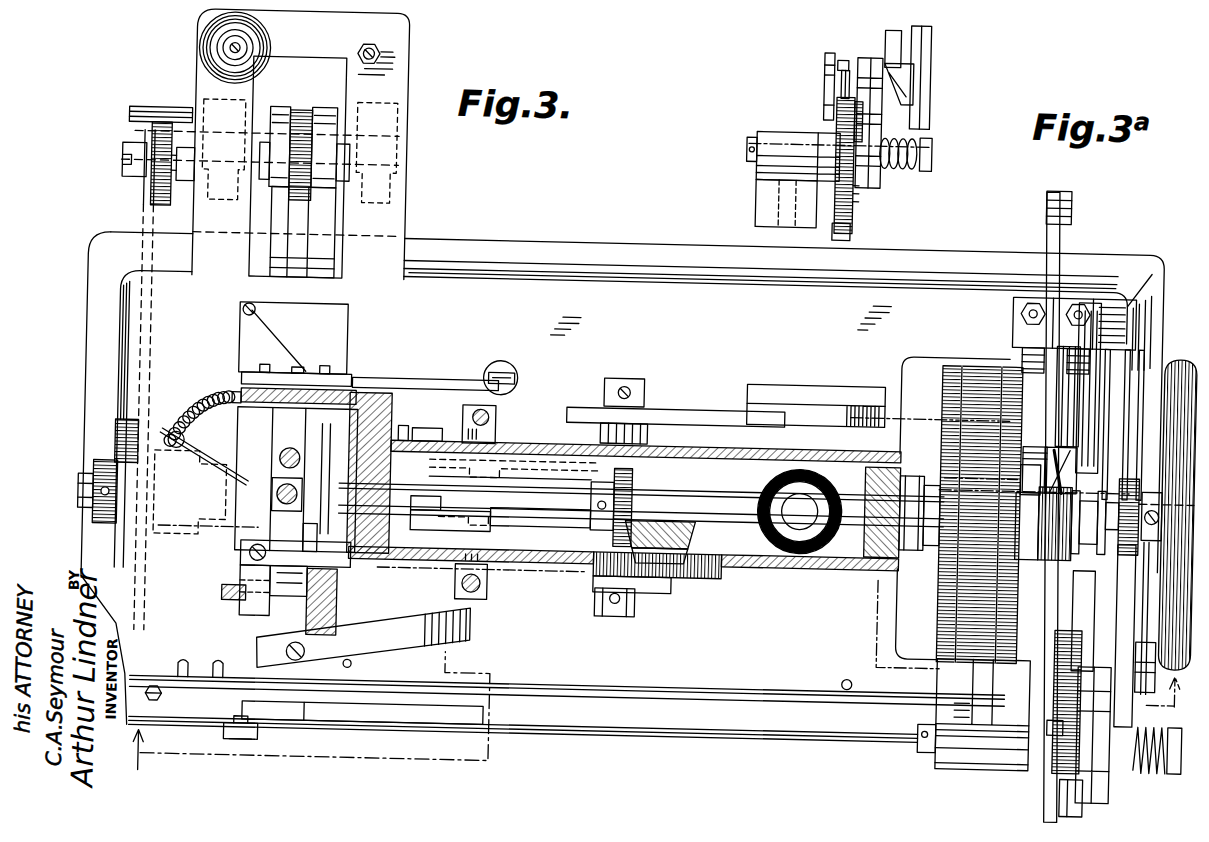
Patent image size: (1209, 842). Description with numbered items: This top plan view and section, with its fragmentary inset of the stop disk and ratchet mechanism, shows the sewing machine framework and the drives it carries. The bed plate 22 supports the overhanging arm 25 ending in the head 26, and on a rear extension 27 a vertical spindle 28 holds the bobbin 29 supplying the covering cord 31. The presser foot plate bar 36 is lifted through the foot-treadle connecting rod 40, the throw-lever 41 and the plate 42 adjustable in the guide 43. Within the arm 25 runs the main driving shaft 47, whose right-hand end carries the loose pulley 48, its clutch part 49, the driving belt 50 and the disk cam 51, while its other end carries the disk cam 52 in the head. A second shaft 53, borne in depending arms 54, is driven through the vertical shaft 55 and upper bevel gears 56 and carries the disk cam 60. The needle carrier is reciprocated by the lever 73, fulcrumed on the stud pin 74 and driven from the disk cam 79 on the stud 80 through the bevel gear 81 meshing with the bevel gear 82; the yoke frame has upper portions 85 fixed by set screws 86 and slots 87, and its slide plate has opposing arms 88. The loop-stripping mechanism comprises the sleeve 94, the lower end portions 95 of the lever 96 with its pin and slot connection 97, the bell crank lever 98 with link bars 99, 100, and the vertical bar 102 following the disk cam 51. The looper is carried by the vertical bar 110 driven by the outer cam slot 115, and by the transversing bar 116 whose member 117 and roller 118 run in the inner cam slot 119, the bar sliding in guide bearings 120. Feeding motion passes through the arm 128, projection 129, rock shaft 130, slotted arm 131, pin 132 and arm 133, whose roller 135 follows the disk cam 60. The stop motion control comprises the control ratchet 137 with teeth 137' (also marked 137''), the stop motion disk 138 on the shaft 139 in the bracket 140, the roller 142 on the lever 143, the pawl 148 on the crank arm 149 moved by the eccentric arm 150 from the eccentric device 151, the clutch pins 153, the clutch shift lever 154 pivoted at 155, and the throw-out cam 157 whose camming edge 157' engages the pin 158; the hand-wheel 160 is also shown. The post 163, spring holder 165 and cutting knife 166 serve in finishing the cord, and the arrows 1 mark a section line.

In FIG. 3, the section line 1 is at (647, 718).
In FIG. 3, the bed plate 22 is at (667, 301).
In FIG. 3, the overhanging arm 25 is at (815, 565).
In FIG. 3, the head 26 is at (240, 383).
In FIG. 3, the rear extension 27 is at (264, 143).
In FIG. 3, the vertical spindle 28 is at (220, 54).
In FIG. 3, the bobbin 29 is at (198, 62).
In FIG. 3, the fabric cord 31 is at (228, 478).
In FIG. 3, the presser foot plate bar 36 is at (287, 456).
In FIG. 3, the foot-treadle connecting rod 40 is at (501, 368).
In FIG. 3, the throw-lever 41 is at (415, 378).
In FIG. 3, the plate 42 is at (278, 378).
In FIG. 3, the guide 43 is at (303, 376).
In FIG. 3, the main driving shaft 47 is at (1170, 550).
In FIG. 3, the loose pulley 48 is at (952, 362).
In FIG. 3, the clutch part 49 is at (1030, 500).
In FIG. 3, the driving belt 50 is at (1009, 475).
In FIG. 3, the disk cam 51 is at (941, 374).
In FIG. 3, the disk cam 52 is at (335, 444).
In FIG. 3, the second shaft 53 is at (85, 497).
In FIG. 3, the arms 54 is at (170, 562).
In FIG. 3, the vertical shaft 55 is at (783, 498).
In FIG. 3, the upper bevel gears 56 is at (860, 478).
In FIG. 3, the disk cam 60 is at (114, 447).
In FIG. 3, the lever 73 is at (652, 590).
In FIG. 3, the stud pin 74 is at (616, 618).
In FIG. 3, the disk cam 79 is at (690, 582).
In FIG. 3, the stud 80 is at (672, 535).
In FIG. 3, the bevel gear 81 is at (685, 552).
In FIG. 3, the bevel gear 82 is at (633, 492).
In FIG. 3, the upper laterally extending portions 85 is at (490, 596).
In FIG. 3, the set screws 86 is at (498, 632).
In FIG. 3, the slots 87 is at (490, 581).
In FIG. 3, the opposing arms 88 is at (478, 520).
In FIG. 3, the sleeve 94 is at (470, 515).
In FIG. 3, the lower end portions 95 is at (422, 570).
In FIG. 3, the lever 96 is at (410, 448).
In FIG. 3, the pin and slot connection 97 is at (412, 419).
In FIG. 3, the bell crank lever 98 is at (680, 412).
In FIG. 3, the link bar 99 is at (563, 470).
In FIG. 3, the link bar 100 is at (815, 397).
In FIG. 3, the vertical bar 102 is at (922, 544).
In FIG. 3, the vertical bar 110 is at (275, 508).
In FIG. 3, the outer cam slot 115 is at (312, 626).
In FIG. 3, the transversing bar 116 is at (253, 628).
In FIG. 3, the member 117 is at (250, 558).
In FIG. 3, the roller 118 is at (321, 535).
In FIG. 3, the inner cam slot 119 is at (372, 568).
In FIG. 3, the guide bearings 120 is at (250, 600).
In FIG. 3, the arm 128 is at (296, 226).
In FIG. 3, the projection 129 is at (296, 140).
In FIG. 3, the rock shaft 130 is at (328, 168).
In FIG. 3, the slotted arm 131 is at (158, 192).
In FIG. 3, the pin 132 is at (121, 172).
In FIG. 3, the arm 133 is at (140, 210).
In FIG. 3, the roller 135 is at (226, 408).
In FIG. 3, the control ratchet 137 is at (1041, 726).
In FIG. 3A, the control ratchet 137 is at (898, 166).
In FIG. 3A, the ratchet teeth 137' is at (887, 200).
In FIG. 3, the gear teeth 137'' is at (972, 701).
In FIG. 3, the stop motion disk 138 is at (1078, 758).
In FIG. 3A, the stop motion disk 138 is at (848, 230).
In FIG. 3, the shaft 139 is at (928, 730).
In FIG. 3A, the shaft 139 is at (741, 148).
In FIG. 3, the bracket 140 is at (965, 760).
In FIG. 3A, the bracket 140 is at (761, 196).
In FIG. 3, the roller 142 is at (1059, 722).
In FIG. 3A, the roller 142 is at (834, 56).
In FIG. 3, the lever 143 is at (1053, 688).
In FIG. 3A, the lever 143 is at (820, 103).
In FIG. 3, the pawl 148 is at (1104, 792).
In FIG. 3A, the pawl 148 is at (824, 83).
In FIG. 3, the crank arm 149 is at (1108, 762).
In FIG. 3A, the crank arm 149 is at (866, 104).
In FIG. 3, the eccentric arm 150 is at (1126, 706).
In FIG. 3A, the eccentric arm 150 is at (893, 62).
In FIG. 3, the eccentric device 151 is at (1133, 472).
In FIG. 3A, the eccentric device 151 is at (886, 38).
In FIG. 3, the pins 153 is at (1022, 562).
In FIG. 3, the clutch shift lever 154 is at (1083, 452).
In FIG. 3, the pivot 155 is at (1140, 624).
In FIG. 3, the throw-out cam 157 is at (1006, 465).
In FIG. 3, the camming edge 157' is at (1084, 445).
In FIG. 3, the pin 158 is at (1140, 590).
In FIG. 3A, the hand-wheel 160 is at (920, 90).
In FIG. 3, the post 163 is at (849, 677).
In FIG. 3, the spring holder 165 is at (429, 646).
In FIG. 3, the cutting knife 166 is at (412, 724).